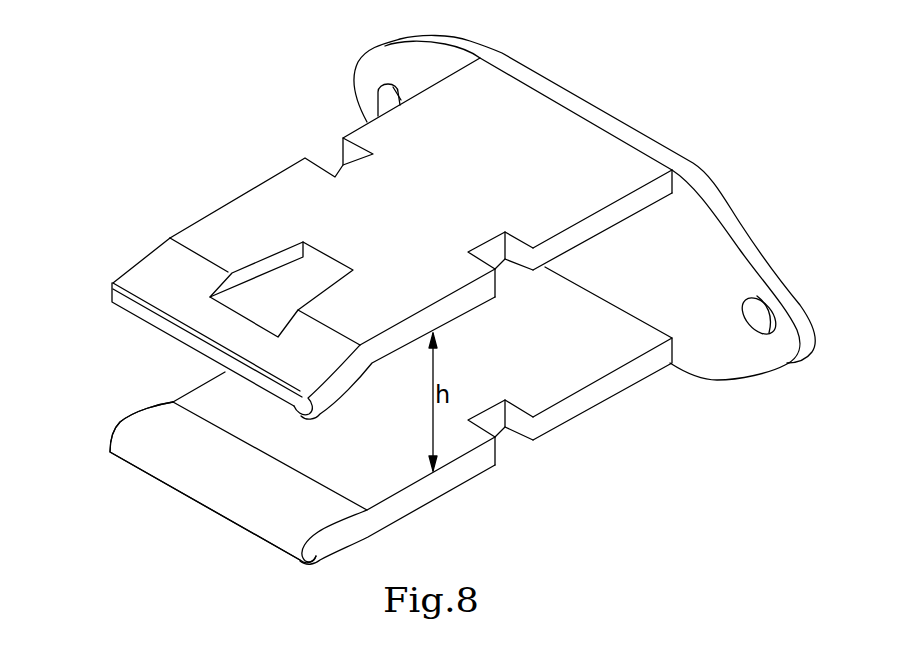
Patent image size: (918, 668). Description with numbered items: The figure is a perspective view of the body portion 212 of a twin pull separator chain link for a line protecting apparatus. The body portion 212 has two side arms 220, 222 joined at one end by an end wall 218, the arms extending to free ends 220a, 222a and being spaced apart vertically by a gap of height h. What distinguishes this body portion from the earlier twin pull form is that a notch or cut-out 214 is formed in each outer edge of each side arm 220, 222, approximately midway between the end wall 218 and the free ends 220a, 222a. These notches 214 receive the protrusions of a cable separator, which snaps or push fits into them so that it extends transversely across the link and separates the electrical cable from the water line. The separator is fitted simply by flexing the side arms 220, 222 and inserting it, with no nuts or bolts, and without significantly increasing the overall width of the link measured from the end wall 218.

The body portion 212 is at (648, 110).
The notch 214 is at (352, 150).
The end wall 218 is at (667, 272).
The side arm 220 is at (628, 378).
The free end 220a is at (198, 509).
The side arm 222 is at (578, 235).
The free end 222a is at (124, 310).